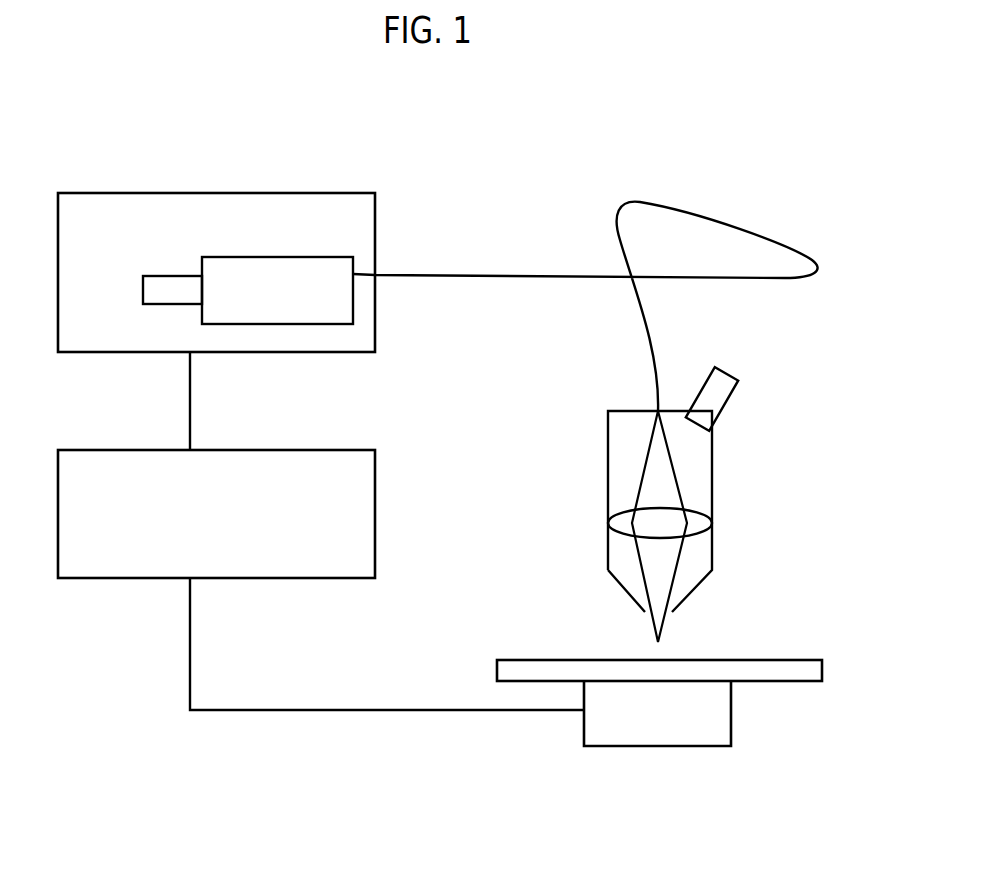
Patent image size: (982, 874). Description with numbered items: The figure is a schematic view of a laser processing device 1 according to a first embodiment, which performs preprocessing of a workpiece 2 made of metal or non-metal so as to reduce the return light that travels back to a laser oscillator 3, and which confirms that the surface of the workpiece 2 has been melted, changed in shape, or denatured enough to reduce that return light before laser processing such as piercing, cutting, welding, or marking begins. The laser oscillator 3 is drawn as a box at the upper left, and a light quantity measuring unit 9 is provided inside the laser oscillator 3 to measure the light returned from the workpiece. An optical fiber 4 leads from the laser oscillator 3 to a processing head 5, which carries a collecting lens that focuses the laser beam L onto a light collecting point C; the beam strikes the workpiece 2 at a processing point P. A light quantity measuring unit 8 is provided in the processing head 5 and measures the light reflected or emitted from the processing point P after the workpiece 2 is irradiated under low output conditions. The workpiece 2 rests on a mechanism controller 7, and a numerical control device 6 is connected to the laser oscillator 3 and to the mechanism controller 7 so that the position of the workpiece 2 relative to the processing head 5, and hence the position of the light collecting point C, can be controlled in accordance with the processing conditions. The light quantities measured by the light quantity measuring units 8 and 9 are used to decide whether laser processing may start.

The laser processing device 1 is at (453, 143).
The workpiece 2 is at (545, 660).
The laser oscillator 3 is at (242, 193).
The optical fiber 4 is at (442, 275).
The processing head 5 is at (628, 411).
The numerical control device 6 is at (285, 450).
The mechanism controller 7 is at (731, 715).
The light quantity measuring unit 8 is at (735, 377).
The light quantity measuring unit 9 is at (168, 275).
The laser beam L is at (638, 498).
The light collecting point C is at (657, 638).
The processing point P is at (659, 660).